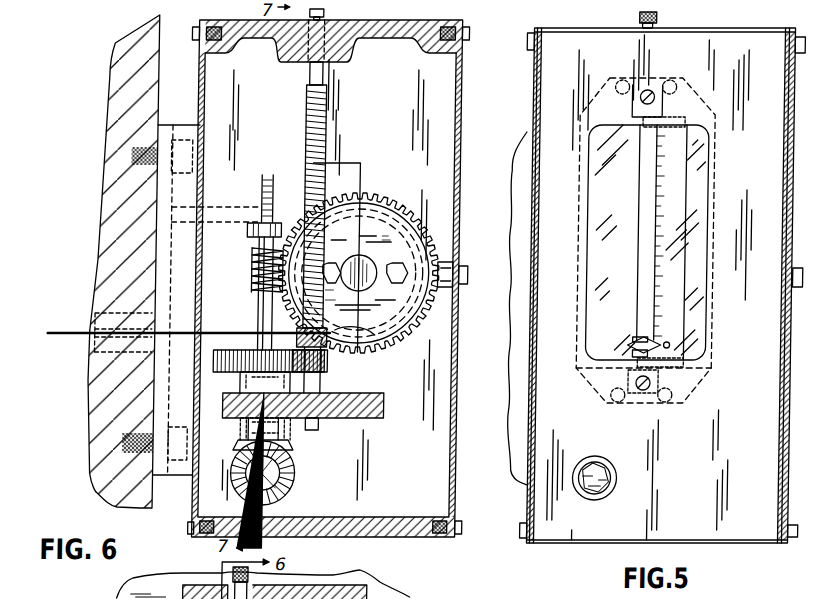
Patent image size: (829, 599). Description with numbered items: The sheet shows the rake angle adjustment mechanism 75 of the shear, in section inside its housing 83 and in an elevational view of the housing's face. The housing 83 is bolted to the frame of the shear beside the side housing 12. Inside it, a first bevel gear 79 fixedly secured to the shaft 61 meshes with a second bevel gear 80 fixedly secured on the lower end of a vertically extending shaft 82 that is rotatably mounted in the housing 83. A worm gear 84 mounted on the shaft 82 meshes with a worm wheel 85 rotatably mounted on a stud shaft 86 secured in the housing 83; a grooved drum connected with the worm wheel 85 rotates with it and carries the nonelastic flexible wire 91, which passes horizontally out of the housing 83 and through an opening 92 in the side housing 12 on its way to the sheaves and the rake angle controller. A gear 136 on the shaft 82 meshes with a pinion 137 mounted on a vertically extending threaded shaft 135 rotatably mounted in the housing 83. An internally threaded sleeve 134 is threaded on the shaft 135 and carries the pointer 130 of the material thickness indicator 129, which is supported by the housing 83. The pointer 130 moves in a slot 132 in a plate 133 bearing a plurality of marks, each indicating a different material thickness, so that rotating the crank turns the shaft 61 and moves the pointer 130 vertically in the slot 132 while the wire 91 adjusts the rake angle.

In FIG. 6, the side housing 12 is at (140, 32).
In FIG. 6, the housing 83 is at (421, 535).
In FIG. 5, the housing 83 is at (610, 533).
In FIG. 6, the opening 92 is at (105, 300).
In FIG. 6, the flexible wire 91 is at (75, 335).
In FIG. 6, the vertically extending shaft 135 is at (309, 105).
In FIG. 6, the rake angle adjustment mechanism 75 is at (362, 235).
In FIG. 6, the worm wheel 85 is at (411, 200).
In FIG. 6, the stud shaft 86 is at (419, 235).
In FIG. 6, the internally threaded sleeve 134 is at (380, 348).
In FIG. 6, the vertically extending shaft 82 is at (263, 310).
In FIG. 6, the worm gear 84 is at (256, 268).
In FIG. 6, the second bevel gear 80 is at (297, 435).
In FIG. 6, the pinion 137 is at (333, 363).
In FIG. 6, the gear 136 is at (229, 412).
In FIG. 6, the first bevel gear 79 is at (297, 463).
In FIG. 6, the shaft 61 is at (288, 485).
In FIG. 5, the shaft 61 is at (614, 472).
In FIG. 5, the material thickness indicator 129 is at (721, 195).
In FIG. 5, the plate 133 is at (601, 223).
In FIG. 5, the slot 132 is at (644, 287).
In FIG. 5, the pointer 130 is at (638, 343).